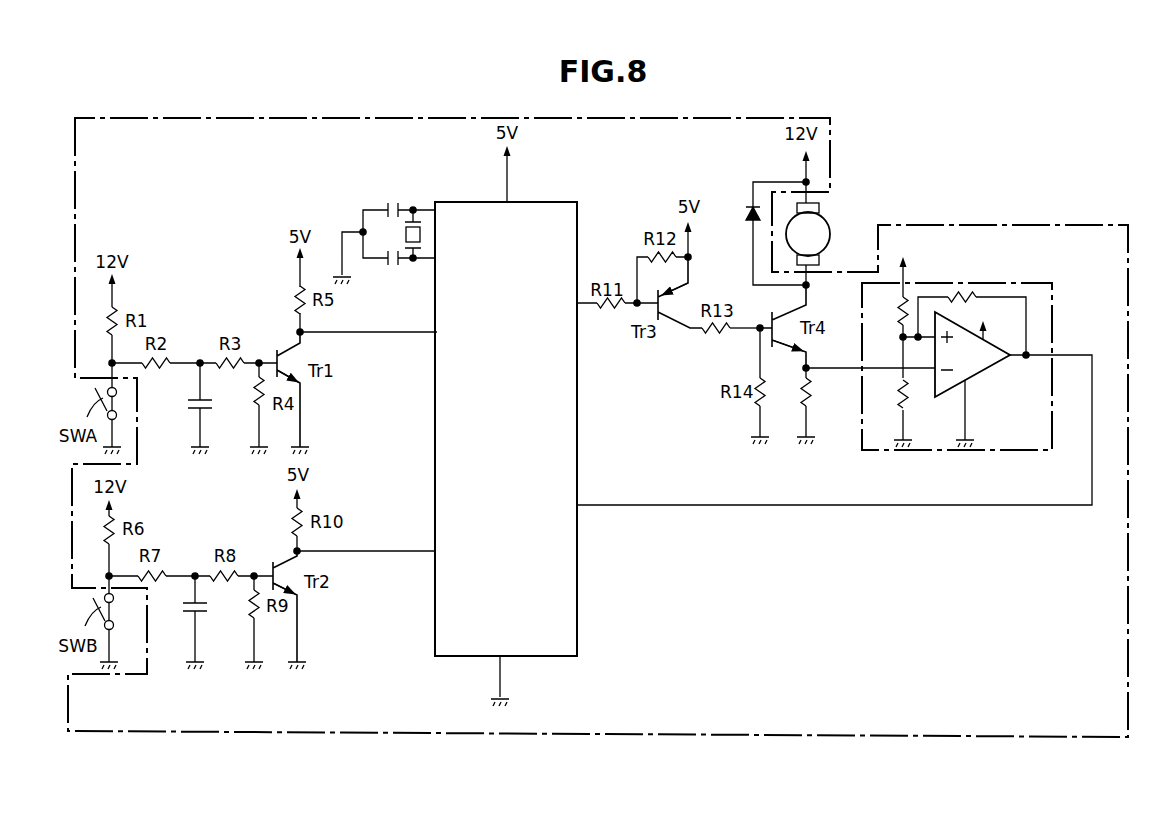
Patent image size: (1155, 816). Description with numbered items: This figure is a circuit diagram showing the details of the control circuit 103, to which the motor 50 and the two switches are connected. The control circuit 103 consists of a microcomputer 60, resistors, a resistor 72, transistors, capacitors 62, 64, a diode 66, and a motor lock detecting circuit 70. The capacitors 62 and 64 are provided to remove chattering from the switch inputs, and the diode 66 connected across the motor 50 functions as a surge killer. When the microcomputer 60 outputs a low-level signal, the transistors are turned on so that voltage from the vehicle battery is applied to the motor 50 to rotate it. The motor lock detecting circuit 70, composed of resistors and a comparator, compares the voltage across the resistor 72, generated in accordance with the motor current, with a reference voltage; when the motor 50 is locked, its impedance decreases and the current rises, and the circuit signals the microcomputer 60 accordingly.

The control circuit 103 is at (412, 118).
The microcomputer 60 is at (577, 620).
The capacitor 62 is at (212, 414).
The capacitor 64 is at (207, 605).
The diode 66 is at (748, 218).
The motor 50 is at (831, 232).
The motor lock detecting circuit 70 is at (1011, 282).
The resistor 72 is at (812, 389).